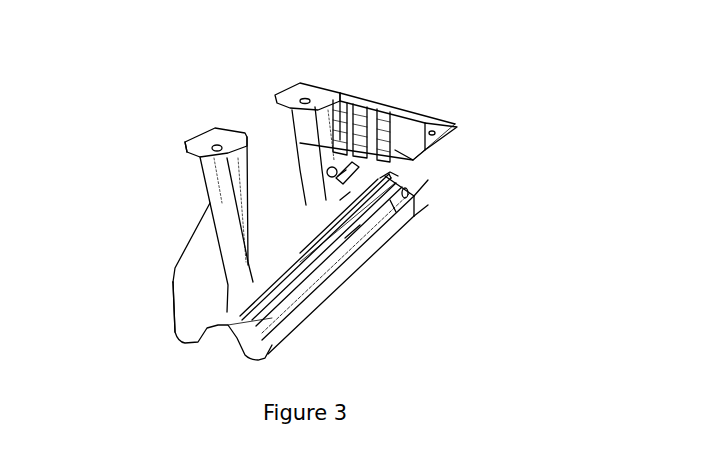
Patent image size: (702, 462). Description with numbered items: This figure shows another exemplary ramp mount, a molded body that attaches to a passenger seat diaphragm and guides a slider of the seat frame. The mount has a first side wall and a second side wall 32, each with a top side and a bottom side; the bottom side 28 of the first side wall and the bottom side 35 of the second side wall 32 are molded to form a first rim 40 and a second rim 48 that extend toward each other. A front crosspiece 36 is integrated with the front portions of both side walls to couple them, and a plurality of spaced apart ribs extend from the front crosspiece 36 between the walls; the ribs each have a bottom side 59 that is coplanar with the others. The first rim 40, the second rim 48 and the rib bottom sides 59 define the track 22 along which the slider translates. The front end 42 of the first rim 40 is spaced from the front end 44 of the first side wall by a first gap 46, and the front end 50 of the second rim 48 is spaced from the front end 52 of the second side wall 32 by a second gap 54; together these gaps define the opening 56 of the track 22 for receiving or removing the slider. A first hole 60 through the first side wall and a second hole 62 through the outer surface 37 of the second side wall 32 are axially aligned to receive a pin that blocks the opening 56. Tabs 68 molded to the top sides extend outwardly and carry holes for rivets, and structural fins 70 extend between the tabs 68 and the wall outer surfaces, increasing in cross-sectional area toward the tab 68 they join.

The track 22 is at (218, 358).
The bottom side of first side wall 28 is at (327, 287).
The second side wall 32 is at (152, 232).
The bottom side of second side wall 35 is at (228, 307).
The front crosspiece 36 is at (400, 117).
The outer surface of second side wall 37 is at (287, 214).
The first rim 40 is at (347, 230).
The front end of first rim 42 is at (396, 205).
The front end of first side wall 44 is at (428, 172).
The first gap 46 is at (423, 197).
The second rim 48 is at (386, 172).
The front end of second rim 50 is at (340, 197).
The front end of second side wall 52 is at (348, 195).
The second gap 54 is at (344, 172).
The opening of the track 56 is at (400, 152).
The bottom side of rib 59 is at (283, 277).
The first hole 60 is at (430, 190).
The second hole 62 is at (326, 171).
The tab 68 is at (191, 141).
The structural fin 70 is at (240, 222).